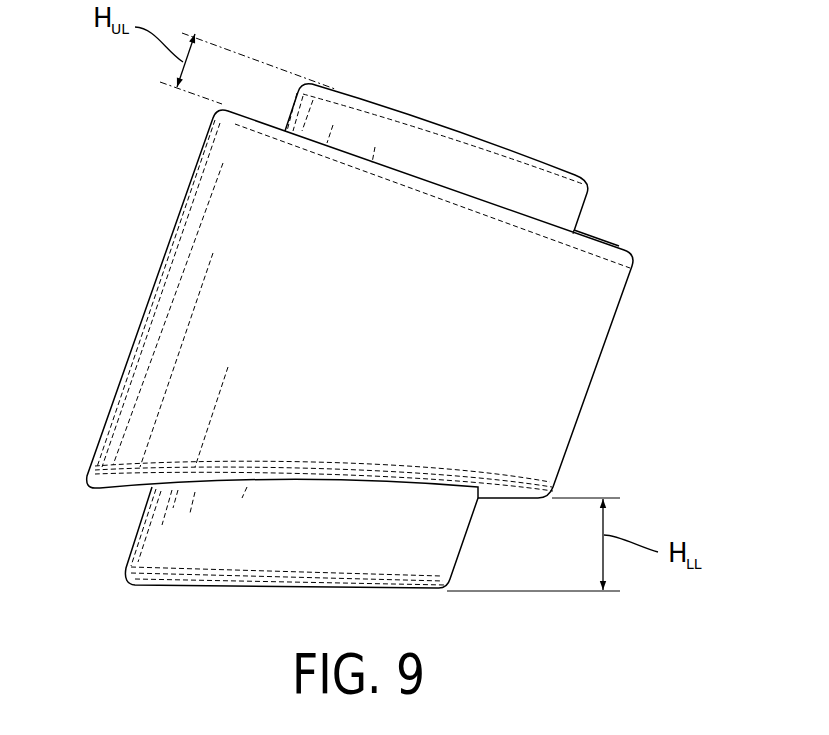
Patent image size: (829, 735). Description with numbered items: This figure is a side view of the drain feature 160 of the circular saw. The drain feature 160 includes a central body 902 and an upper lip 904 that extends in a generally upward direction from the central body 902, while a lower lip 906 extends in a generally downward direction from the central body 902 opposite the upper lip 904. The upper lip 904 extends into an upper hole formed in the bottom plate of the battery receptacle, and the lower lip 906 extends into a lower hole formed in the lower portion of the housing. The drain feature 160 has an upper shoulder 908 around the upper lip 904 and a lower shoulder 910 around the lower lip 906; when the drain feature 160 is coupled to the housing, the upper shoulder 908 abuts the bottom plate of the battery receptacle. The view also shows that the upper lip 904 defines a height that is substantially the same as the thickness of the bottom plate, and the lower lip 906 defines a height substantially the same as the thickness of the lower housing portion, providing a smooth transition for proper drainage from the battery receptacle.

The drain feature 160 is at (512, 33).
The central body 902 is at (613, 303).
The upper lip 904 is at (545, 196).
The lower lip 906 is at (213, 553).
The upper shoulder 908 is at (600, 238).
The lower shoulder 910 is at (151, 489).